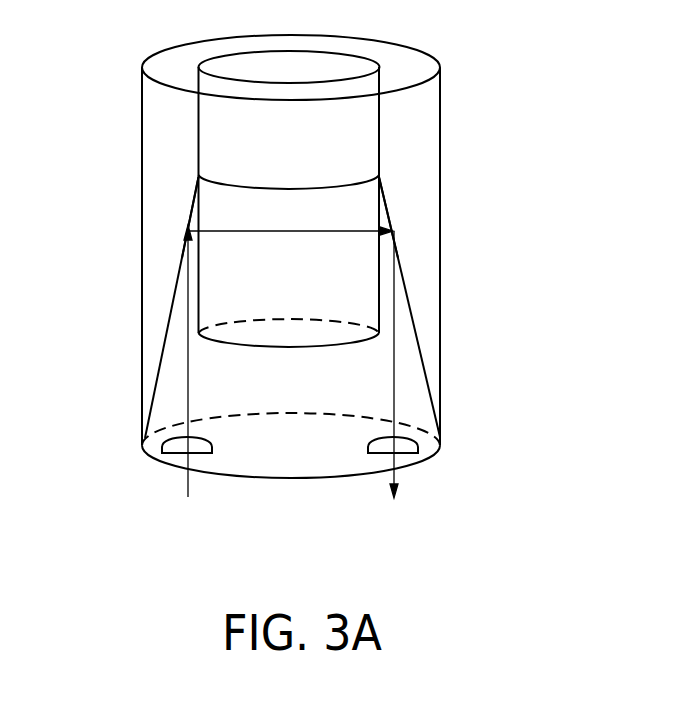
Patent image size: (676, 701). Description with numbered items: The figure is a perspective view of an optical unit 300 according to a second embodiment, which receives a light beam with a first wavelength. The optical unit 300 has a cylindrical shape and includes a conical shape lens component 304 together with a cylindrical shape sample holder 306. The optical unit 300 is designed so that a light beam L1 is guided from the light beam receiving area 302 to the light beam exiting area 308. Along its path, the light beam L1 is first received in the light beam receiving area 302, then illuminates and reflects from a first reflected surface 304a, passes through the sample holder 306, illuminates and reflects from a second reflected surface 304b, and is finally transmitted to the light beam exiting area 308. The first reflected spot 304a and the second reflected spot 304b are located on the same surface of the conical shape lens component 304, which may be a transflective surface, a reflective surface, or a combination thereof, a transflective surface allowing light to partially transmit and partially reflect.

The optical unit 300 is at (533, 43).
The light beam receiving area 302 is at (173, 448).
The lens component 304 is at (172, 311).
The first reflected surface 304a is at (191, 217).
The second reflected surface 304b is at (388, 209).
The sample holder 306 is at (200, 131).
The light beam exiting area 308 is at (408, 447).
The light beam L1 is at (188, 372).